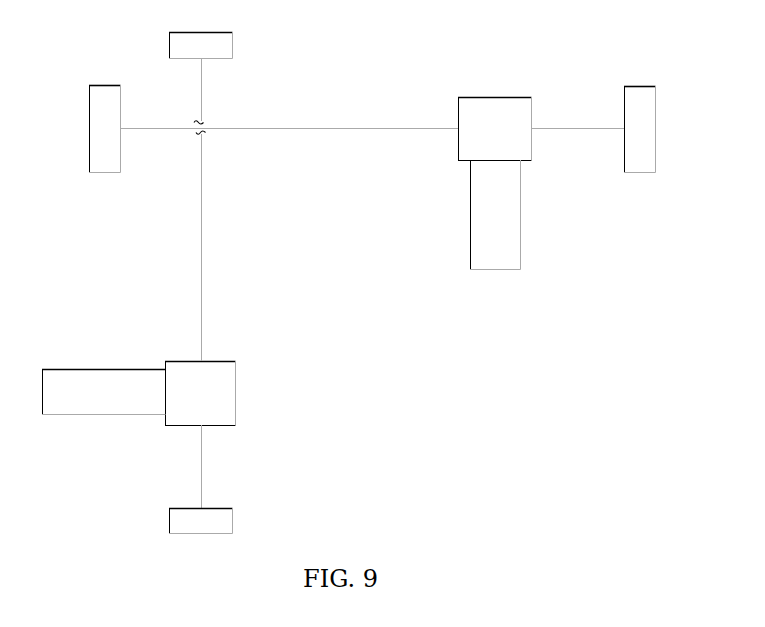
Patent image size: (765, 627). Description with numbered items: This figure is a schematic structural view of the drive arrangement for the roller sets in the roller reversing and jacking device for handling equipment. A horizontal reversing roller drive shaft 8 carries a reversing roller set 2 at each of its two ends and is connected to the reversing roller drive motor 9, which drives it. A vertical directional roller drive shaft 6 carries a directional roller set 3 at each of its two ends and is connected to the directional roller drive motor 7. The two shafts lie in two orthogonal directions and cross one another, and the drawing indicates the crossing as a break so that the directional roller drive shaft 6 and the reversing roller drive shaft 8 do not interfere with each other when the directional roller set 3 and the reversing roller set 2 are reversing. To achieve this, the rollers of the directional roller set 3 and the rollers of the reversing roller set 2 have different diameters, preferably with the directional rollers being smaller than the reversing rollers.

The reversing roller set 2 is at (380, 111).
The directional roller set 3 is at (205, 267).
The directional roller drive shaft 6 is at (211, 283).
The directional roller drive motor 7 is at (104, 374).
The reversing roller drive shaft 8 is at (372, 108).
The reversing roller drive motor 9 is at (513, 215).